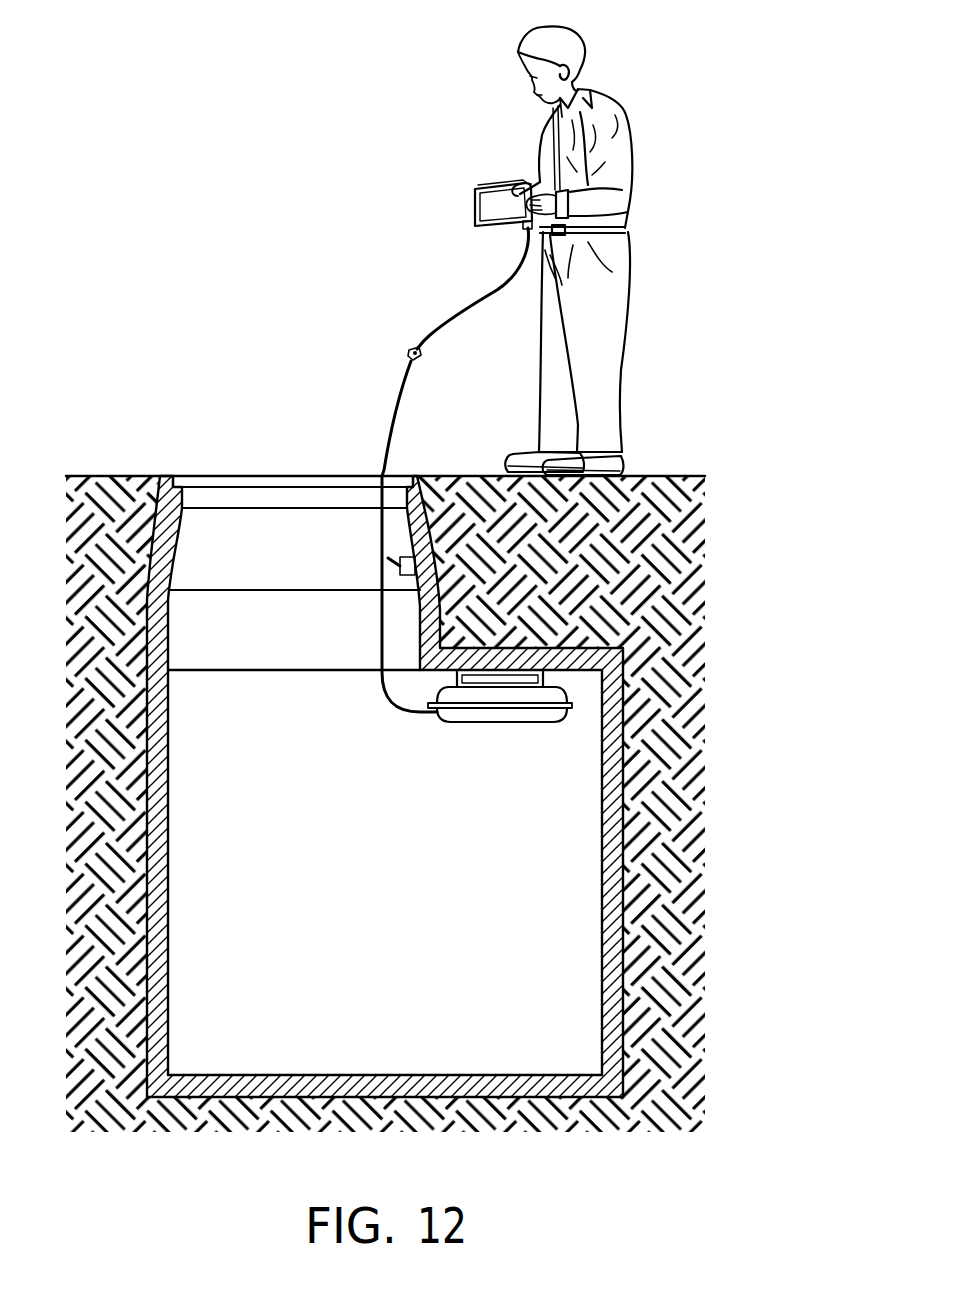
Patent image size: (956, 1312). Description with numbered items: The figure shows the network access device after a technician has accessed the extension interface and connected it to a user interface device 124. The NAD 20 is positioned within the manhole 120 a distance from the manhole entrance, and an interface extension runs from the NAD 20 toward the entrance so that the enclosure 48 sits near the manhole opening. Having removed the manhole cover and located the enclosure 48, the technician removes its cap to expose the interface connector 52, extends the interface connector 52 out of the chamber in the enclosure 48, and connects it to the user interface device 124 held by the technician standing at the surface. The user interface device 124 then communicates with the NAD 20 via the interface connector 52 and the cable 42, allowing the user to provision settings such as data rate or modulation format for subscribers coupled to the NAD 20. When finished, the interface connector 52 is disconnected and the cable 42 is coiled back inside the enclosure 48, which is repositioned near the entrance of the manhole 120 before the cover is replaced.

The NAD 20 is at (510, 713).
The cable 42 is at (466, 304).
The enclosure 48 is at (409, 348).
The interface connector 52 is at (524, 224).
The manhole 120 is at (225, 545).
The user interface device 124 is at (476, 190).